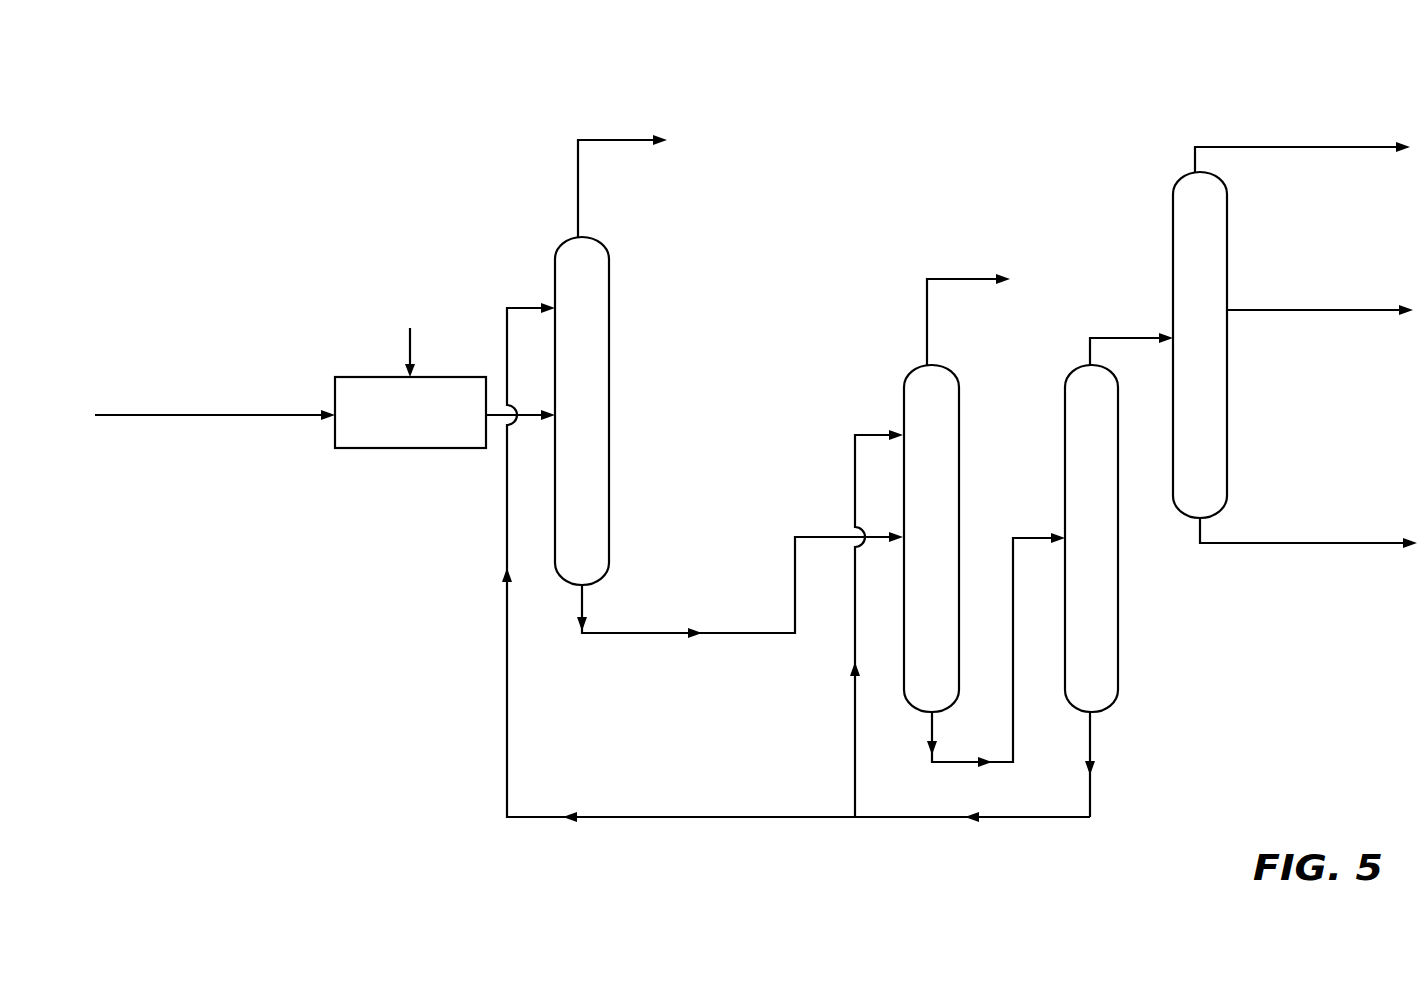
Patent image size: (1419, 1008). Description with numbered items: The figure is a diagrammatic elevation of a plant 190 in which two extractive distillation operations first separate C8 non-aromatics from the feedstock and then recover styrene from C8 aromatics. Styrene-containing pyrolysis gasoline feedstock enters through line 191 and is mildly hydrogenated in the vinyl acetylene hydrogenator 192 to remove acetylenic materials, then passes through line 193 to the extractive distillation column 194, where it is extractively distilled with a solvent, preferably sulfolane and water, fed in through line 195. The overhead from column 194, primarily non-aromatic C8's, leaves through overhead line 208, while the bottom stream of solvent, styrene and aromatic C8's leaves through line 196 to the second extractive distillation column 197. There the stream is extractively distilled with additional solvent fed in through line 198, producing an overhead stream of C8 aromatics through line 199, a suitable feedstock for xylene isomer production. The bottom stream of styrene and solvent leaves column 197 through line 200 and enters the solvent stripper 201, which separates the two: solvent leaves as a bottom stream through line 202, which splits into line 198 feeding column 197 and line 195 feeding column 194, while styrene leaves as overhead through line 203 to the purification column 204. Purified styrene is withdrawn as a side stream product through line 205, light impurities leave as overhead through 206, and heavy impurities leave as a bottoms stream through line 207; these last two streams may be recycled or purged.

The plant 190 is at (245, 268).
The line 191 is at (280, 416).
The vinyl acetylene hydrogenator 192 is at (372, 448).
The line 193 is at (520, 417).
The extractive distillation column 194 is at (610, 540).
The line 195 is at (508, 712).
The line 196 is at (580, 600).
The second extractive distillation column 197 is at (903, 397).
The line 198 is at (852, 468).
The line 199 is at (927, 330).
The line 200 is at (932, 730).
The solvent stripper 201 is at (1118, 645).
The line 202 is at (1093, 740).
The line 203 is at (1088, 352).
The purification column 204 is at (1173, 250).
The line 205 is at (1345, 312).
The overhead 206 is at (1345, 150).
The line 207 is at (1340, 546).
The overhead line 208 is at (578, 200).